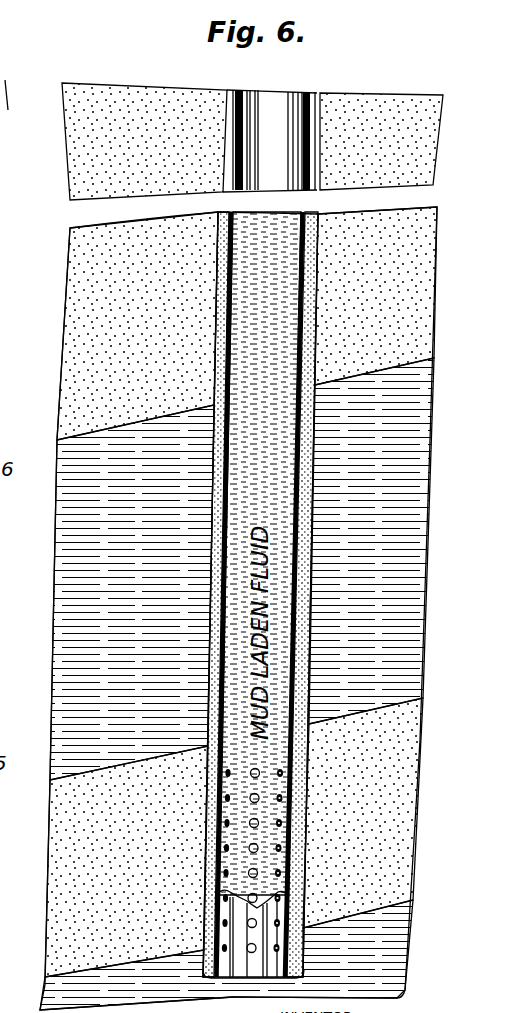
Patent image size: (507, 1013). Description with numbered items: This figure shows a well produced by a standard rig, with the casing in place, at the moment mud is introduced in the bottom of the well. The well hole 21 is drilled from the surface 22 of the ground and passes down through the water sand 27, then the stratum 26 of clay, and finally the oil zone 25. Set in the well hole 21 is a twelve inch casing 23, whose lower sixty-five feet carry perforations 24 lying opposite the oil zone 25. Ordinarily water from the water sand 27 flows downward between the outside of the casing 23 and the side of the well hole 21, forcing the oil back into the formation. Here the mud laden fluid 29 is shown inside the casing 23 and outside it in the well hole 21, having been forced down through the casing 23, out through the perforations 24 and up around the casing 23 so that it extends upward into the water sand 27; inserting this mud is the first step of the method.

The well hole 21 is at (230, 90).
The surface of the ground 22 is at (115, 83).
The casing 23 is at (215, 770).
The perforations 24 is at (257, 772).
The oil zone 25 is at (63, 808).
The stratum of clay 26 is at (67, 515).
The water sand 27 is at (0, 137).
The mud laden fluid 29 is at (318, 214).